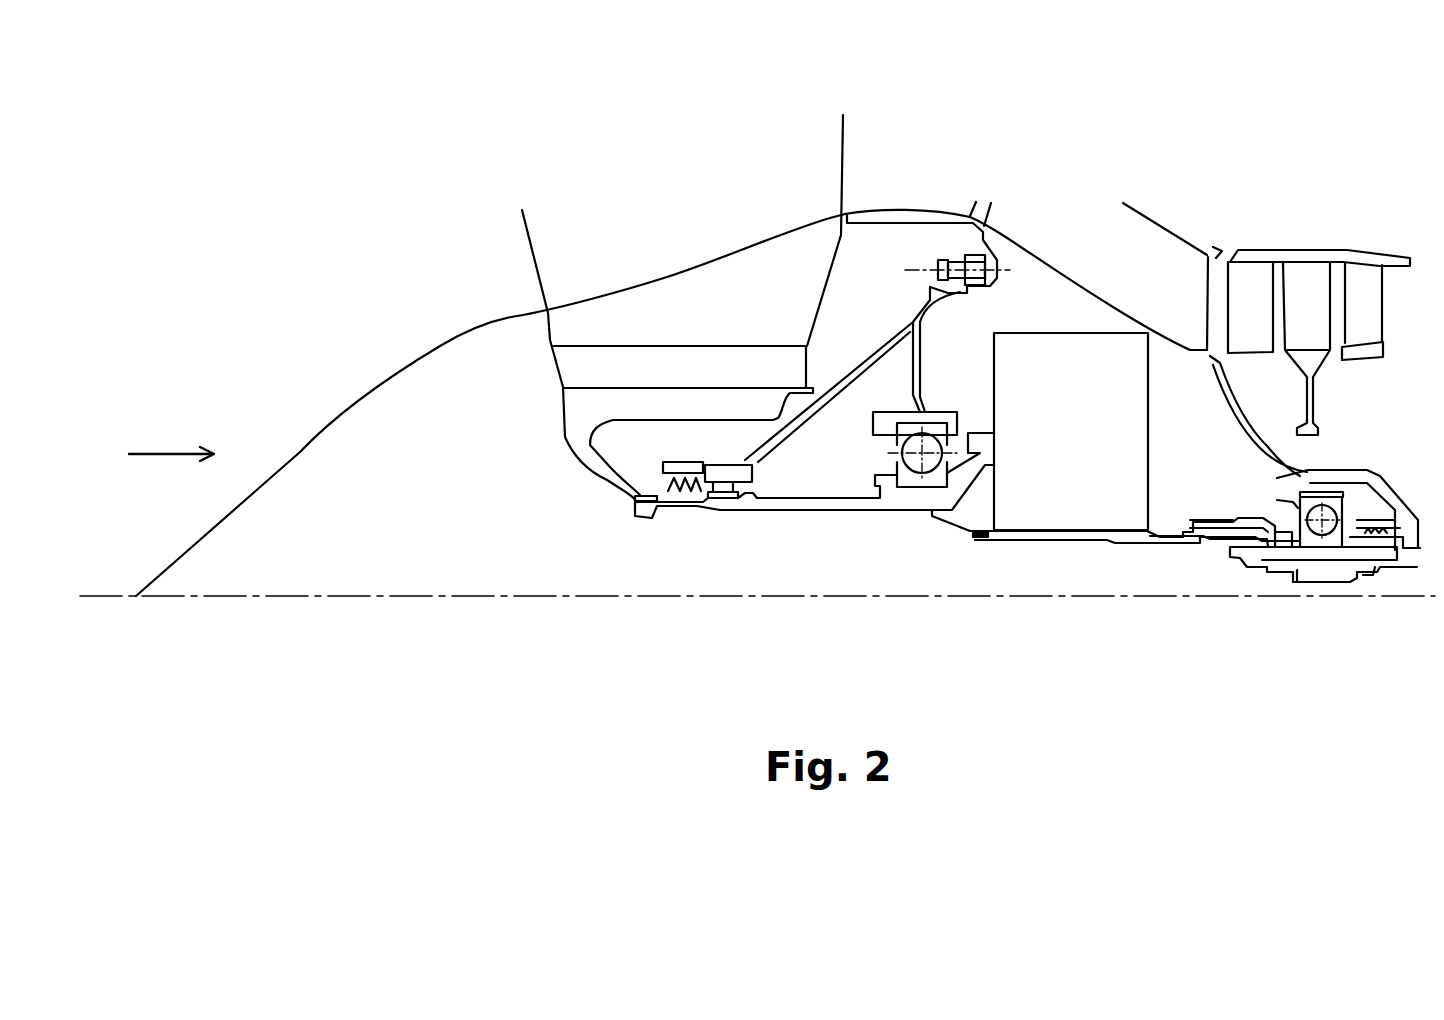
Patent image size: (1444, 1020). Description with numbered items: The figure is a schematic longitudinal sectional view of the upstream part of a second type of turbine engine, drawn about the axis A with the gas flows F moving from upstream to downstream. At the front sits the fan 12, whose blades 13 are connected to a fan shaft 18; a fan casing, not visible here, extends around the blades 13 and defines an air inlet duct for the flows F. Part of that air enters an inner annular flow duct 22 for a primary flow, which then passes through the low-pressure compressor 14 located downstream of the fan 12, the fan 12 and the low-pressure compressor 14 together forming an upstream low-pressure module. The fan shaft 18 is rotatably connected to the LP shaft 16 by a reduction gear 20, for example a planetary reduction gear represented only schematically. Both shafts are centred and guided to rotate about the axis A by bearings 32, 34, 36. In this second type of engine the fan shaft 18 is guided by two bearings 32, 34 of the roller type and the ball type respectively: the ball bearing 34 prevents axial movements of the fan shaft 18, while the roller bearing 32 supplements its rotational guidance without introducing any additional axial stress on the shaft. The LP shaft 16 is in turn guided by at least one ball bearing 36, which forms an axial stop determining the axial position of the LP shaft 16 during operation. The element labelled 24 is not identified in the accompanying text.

The fan 12 is at (566, 272).
The blades 13 is at (573, 330).
The low-pressure compressor 14 is at (1308, 233).
The LP shaft 16 is at (1287, 553).
The fan shaft 18 is at (786, 507).
The reduction gear 20 is at (1071, 431).
The inner annular flow duct 22 is at (1150, 247).
The shaft 24 is at (1003, 538).
The roller bearing 32 is at (722, 503).
The ball bearing 34 is at (913, 462).
The ball bearing 36 is at (1345, 518).
The axis A is at (120, 595).
The gas flows F is at (171, 440).